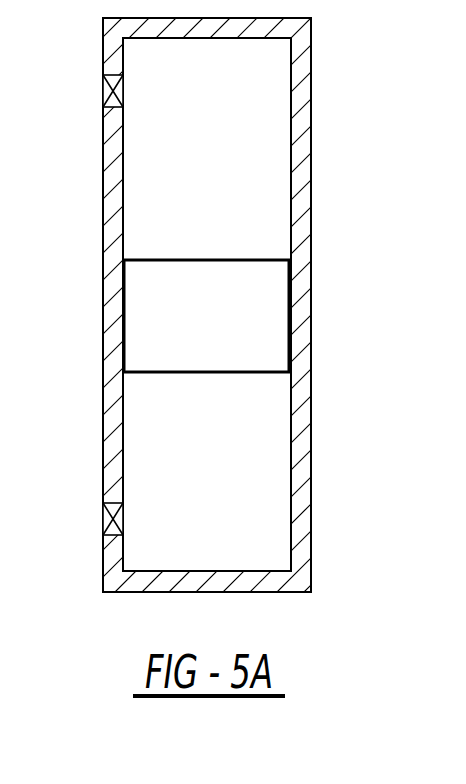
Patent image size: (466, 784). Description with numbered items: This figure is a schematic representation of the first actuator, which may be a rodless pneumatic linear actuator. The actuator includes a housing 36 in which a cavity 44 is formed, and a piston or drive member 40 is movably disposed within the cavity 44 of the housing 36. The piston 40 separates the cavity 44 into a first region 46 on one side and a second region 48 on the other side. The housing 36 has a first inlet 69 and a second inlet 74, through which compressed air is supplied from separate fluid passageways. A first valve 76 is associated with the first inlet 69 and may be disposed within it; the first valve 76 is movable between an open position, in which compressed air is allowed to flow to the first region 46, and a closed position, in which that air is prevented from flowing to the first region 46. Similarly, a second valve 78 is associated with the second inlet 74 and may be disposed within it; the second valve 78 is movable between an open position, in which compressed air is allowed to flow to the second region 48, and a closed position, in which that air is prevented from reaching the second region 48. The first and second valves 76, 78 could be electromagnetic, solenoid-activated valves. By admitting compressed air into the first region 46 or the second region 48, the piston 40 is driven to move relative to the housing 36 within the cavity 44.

The housing 36 is at (307, 231).
The piston 40 is at (142, 271).
The cavity 44 is at (166, 423).
The first region 46 is at (260, 158).
The second region 48 is at (256, 415).
The first inlet 69 is at (106, 100).
The second inlet 74 is at (108, 527).
The first valve 76 is at (107, 100).
The second valve 78 is at (123, 513).